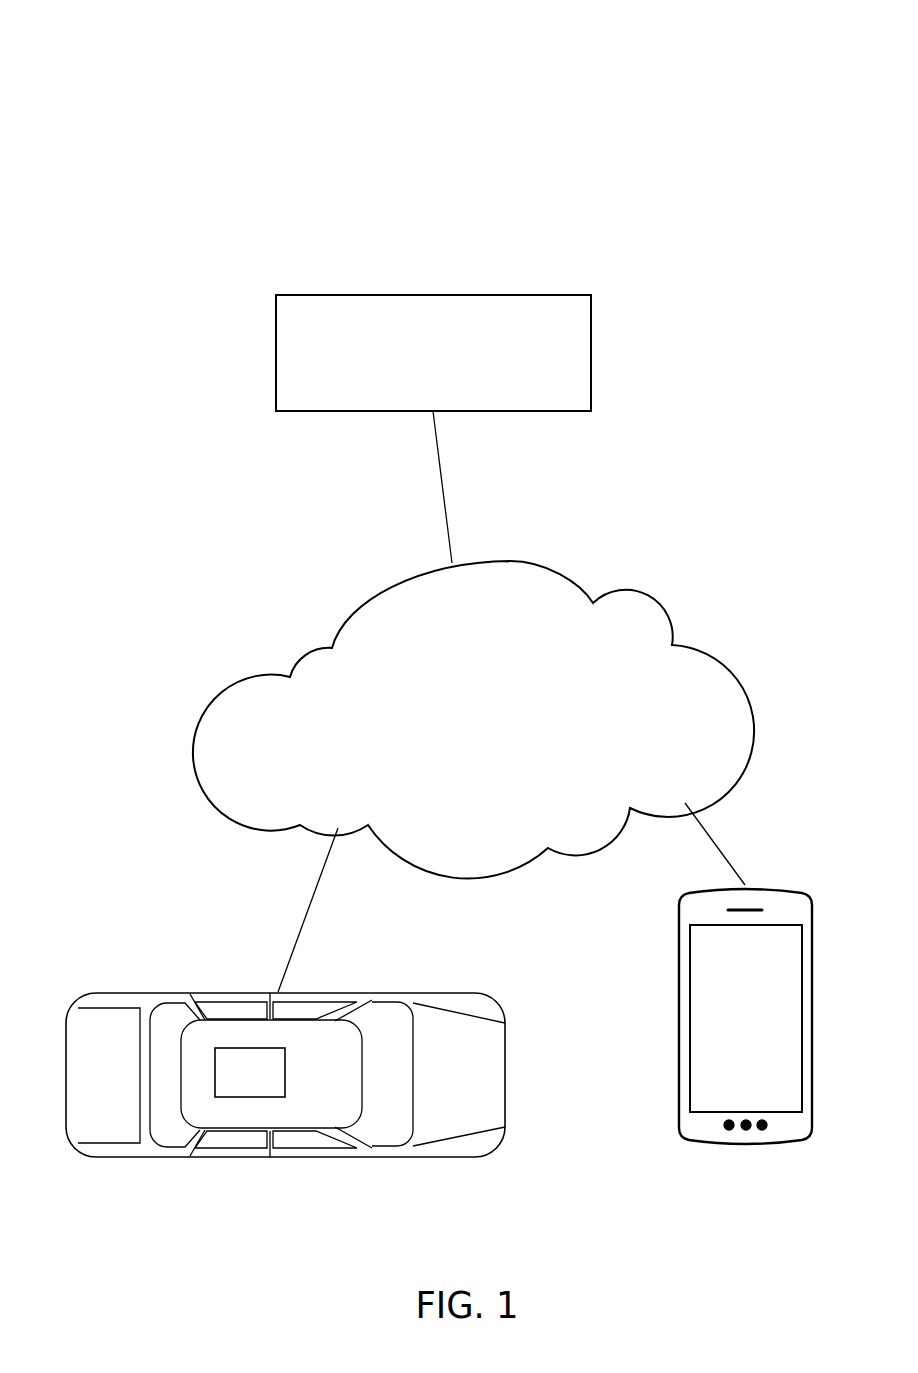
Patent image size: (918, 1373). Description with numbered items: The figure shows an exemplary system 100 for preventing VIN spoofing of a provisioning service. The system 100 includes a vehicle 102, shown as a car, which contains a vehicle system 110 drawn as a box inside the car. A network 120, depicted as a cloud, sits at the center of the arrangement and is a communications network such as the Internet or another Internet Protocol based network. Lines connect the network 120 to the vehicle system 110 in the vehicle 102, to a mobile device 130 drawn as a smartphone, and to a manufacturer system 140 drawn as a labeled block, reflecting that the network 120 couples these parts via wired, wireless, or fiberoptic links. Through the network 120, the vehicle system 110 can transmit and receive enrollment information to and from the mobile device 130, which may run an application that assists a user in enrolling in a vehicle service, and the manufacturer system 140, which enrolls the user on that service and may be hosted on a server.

The system 100 is at (122, 96).
The vehicle 102 is at (152, 993).
The vehicle system 110 is at (250, 1072).
The network 120 is at (473, 720).
The mobile device 130 is at (682, 1038).
The manufacturer system 140 is at (433, 295).